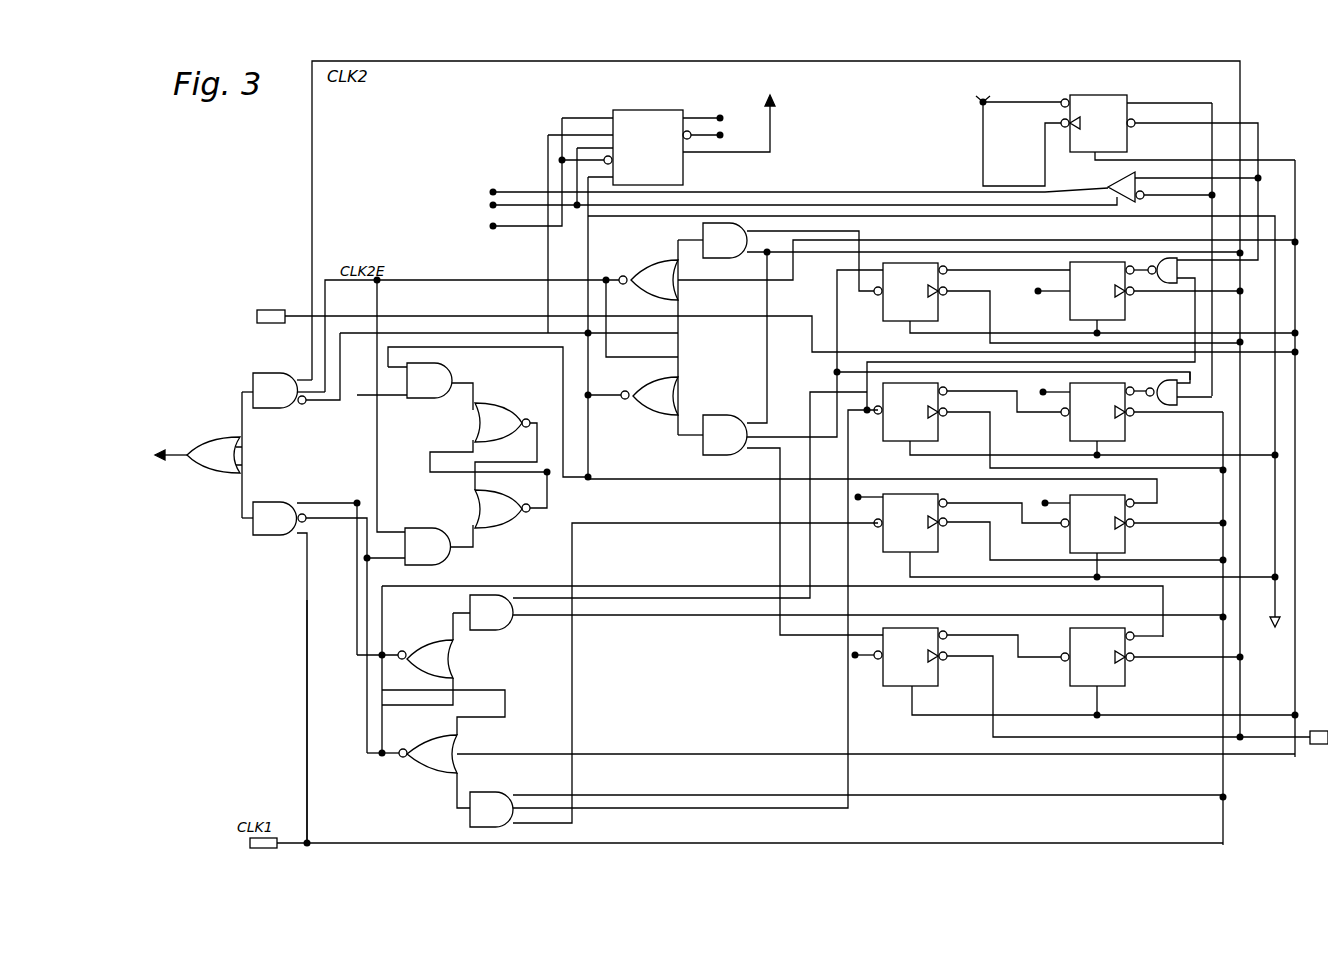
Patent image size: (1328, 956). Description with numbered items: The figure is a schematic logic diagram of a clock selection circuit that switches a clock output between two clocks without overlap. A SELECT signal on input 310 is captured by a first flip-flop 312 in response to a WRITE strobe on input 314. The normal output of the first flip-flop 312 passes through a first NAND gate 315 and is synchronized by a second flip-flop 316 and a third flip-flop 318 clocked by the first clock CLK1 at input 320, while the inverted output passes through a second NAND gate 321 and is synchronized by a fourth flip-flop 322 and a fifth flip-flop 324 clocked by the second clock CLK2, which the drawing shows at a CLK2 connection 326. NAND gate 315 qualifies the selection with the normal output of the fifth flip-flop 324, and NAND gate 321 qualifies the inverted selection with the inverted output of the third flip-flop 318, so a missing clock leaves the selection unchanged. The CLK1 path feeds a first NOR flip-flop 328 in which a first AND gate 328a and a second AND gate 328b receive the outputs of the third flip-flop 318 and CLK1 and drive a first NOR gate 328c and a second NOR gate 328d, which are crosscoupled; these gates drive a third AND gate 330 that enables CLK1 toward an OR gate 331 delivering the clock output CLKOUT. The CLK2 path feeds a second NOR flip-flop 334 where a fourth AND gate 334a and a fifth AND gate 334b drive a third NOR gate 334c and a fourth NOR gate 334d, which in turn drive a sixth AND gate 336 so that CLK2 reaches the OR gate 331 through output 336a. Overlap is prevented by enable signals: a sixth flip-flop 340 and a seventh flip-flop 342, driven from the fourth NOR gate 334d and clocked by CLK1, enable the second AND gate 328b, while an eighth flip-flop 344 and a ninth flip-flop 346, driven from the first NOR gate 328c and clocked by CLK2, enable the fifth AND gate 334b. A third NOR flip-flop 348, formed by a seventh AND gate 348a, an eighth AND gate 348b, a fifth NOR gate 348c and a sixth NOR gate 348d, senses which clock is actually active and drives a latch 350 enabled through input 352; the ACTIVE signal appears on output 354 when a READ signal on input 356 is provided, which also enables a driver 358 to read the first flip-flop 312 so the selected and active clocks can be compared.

The input 310 is at (978, 100).
The first flip-flop 312 is at (1127, 100).
The input 314 is at (762, 192).
The first NAND gate 315 is at (1180, 405).
The second flip-flop 316 is at (1127, 436).
The third flip-flop 318 is at (895, 443).
The input 320 is at (307, 740).
The second NAND gate 321 is at (1172, 258).
The fourth flip-flop 322 is at (1127, 316).
The fifth flip-flop 324 is at (890, 321).
The clock output CLK2 326 is at (1183, 737).
The NOR flip-flop 328 is at (421, 775).
The AND gate 328a is at (470, 602).
The second AND gate 328b is at (480, 822).
The first NOR gate 328c is at (455, 658).
The second NOR gate 328d is at (460, 748).
The AND gate 330 is at (290, 536).
The OR gate 331 is at (222, 437).
The second NOR flip-flop 334 is at (650, 250).
The fourth AND gate 334a is at (703, 237).
The fifth AND gate 334b is at (733, 405).
The third NOR gate 334c is at (680, 288).
The fourth NOR gate 334d is at (660, 420).
The sixth AND gate 336 is at (276, 372).
The output 336a is at (242, 432).
The sixth flip-flop 340 is at (1127, 546).
The seventh flip-flop 342 is at (896, 553).
The eighth flip-flop 344 is at (1127, 679).
The ninth flip-flop 346 is at (895, 687).
The third NOR flip-flop 348 is at (499, 395).
The seventh AND gate 348a is at (445, 400).
The eighth AND gate 348b is at (448, 555).
The fifth NOR gate 348c is at (473, 430).
The sixth NOR gate 348d is at (472, 500).
The latch 350 is at (683, 178).
The input 352 is at (526, 232).
The output 354 is at (522, 172).
The input 356 is at (1110, 178).
The driver 358 is at (292, 318).